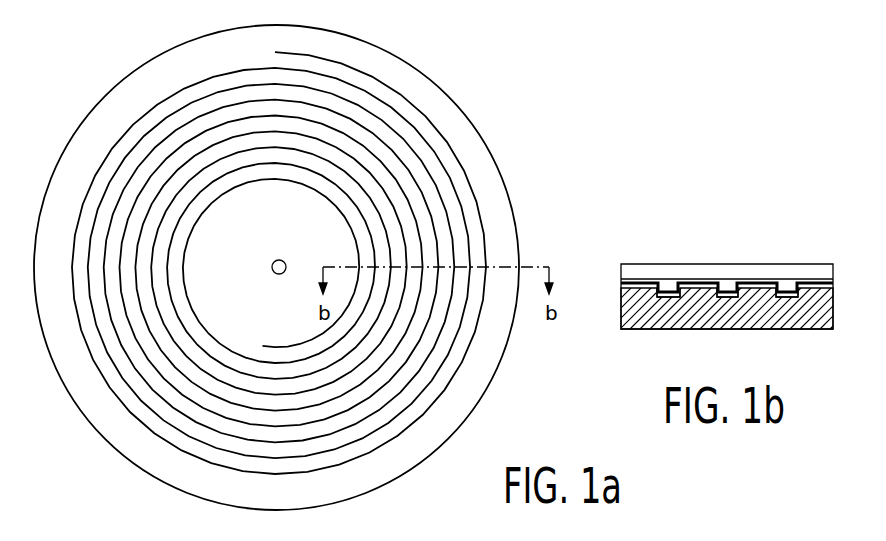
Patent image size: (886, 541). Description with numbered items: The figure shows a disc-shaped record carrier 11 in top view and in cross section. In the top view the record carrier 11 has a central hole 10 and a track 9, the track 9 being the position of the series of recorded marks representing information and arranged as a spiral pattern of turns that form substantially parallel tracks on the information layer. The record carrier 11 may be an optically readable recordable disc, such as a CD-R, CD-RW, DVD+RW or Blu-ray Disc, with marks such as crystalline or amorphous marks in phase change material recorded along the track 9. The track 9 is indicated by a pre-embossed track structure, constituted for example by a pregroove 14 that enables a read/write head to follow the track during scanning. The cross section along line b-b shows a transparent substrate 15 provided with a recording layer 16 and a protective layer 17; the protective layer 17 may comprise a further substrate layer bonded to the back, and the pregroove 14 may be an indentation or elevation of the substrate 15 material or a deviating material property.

In FIG. 1a, the track 9 is at (145, 110).
In FIG. 1a, the central hole 10 is at (279, 259).
In FIG. 1a, the record carrier 11 is at (497, 111).
In FIG. 1b, the record carrier 11 is at (625, 238).
In FIG. 1b, the pregroove 14 is at (728, 293).
In FIG. 1b, the transparent substrate 15 is at (639, 325).
In FIG. 1b, the recording layer 16 is at (804, 282).
In FIG. 1b, the protective layer 17 is at (722, 271).